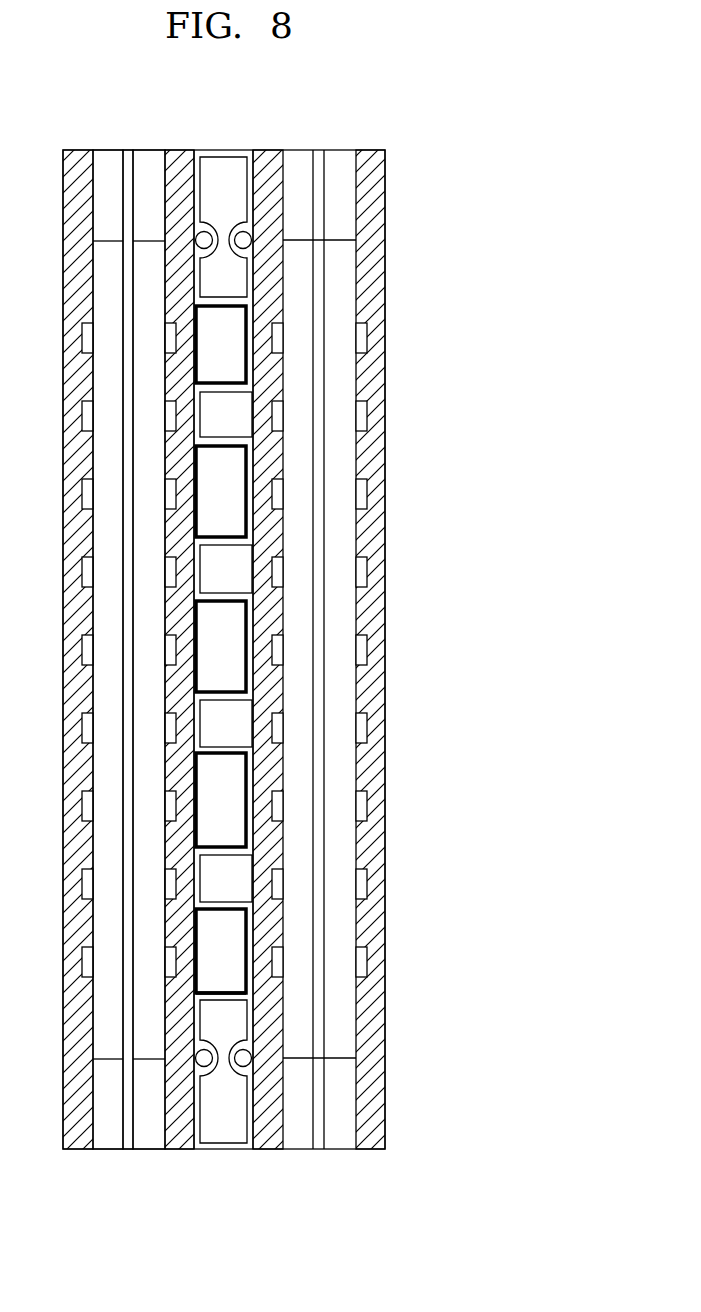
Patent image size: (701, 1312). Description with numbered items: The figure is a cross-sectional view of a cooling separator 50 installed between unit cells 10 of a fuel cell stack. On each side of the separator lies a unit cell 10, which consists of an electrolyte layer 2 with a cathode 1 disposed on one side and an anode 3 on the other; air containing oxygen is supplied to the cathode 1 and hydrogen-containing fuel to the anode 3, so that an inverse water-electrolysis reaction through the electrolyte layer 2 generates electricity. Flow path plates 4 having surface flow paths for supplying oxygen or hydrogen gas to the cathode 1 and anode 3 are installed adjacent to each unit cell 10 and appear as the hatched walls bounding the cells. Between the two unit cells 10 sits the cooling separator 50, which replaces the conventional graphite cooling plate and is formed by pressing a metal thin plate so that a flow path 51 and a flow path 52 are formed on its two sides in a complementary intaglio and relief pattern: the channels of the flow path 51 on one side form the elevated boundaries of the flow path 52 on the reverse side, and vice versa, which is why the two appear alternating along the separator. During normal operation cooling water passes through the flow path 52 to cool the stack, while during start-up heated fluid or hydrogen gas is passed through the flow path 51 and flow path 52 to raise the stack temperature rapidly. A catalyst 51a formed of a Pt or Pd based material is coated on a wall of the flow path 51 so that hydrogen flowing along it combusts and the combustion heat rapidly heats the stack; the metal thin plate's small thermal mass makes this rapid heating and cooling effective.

The unit cell 10 is at (224, 656).
The flow path plate 4 is at (75, 1150).
The anode 3 is at (107, 1053).
The electrolyte layer 2 is at (127, 1147).
The cathode 1 is at (148, 1055).
The cooling separator 50 is at (223, 1150).
The flow path 51 is at (208, 358).
The flow path 52 is at (209, 425).
The catalyst 51a is at (244, 981).